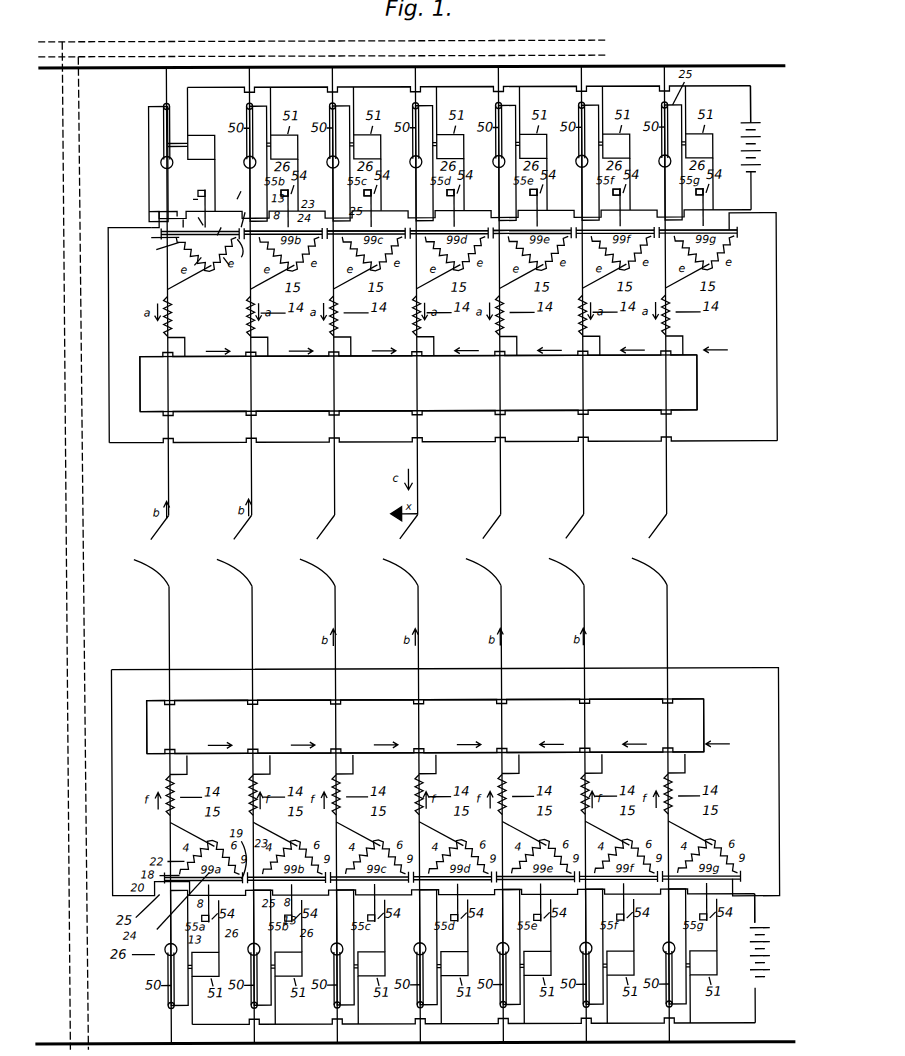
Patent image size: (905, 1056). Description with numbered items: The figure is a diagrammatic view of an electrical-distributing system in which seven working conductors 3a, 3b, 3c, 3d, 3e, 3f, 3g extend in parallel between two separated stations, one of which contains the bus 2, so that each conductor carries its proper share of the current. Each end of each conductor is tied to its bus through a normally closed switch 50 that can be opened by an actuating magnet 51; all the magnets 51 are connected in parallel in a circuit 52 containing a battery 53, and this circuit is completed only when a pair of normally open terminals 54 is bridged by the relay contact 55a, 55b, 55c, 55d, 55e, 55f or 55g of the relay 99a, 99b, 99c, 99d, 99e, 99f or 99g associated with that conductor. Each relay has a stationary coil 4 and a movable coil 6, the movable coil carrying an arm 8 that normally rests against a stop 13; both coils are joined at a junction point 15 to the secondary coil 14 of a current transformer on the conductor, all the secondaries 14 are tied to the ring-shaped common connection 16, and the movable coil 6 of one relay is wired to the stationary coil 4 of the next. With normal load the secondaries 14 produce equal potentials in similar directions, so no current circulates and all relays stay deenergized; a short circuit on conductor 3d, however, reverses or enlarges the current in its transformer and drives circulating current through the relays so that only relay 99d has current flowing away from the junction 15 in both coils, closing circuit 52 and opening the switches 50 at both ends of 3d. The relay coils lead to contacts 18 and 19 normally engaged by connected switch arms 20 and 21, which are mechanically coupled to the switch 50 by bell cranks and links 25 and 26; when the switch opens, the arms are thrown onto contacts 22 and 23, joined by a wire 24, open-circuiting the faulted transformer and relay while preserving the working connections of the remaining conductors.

The bus 2 is at (293, 68).
The working conductor 3a is at (145, 551).
The working conductor 3b is at (228, 550).
The working conductor 3c is at (311, 550).
The working conductor 3d is at (394, 550).
The working conductor 3e is at (477, 550).
The working conductor 3f is at (560, 549).
The working conductor 3g is at (643, 549).
The stationary coil 4 is at (193, 266).
The movable coil 6 is at (230, 266).
The arm 8 is at (196, 216).
The stop 13 is at (186, 198).
The secondary coil 14 is at (176, 314).
The junction point 15 is at (192, 280).
The common connection 16 is at (380, 357).
The contact 18 is at (158, 248).
The contact 19 is at (238, 248).
The switch arm 20 is at (178, 217).
The switch arm 21 is at (241, 188).
The contact 22 is at (156, 235).
The contact 23 is at (245, 211).
The wire 24 is at (221, 222).
The bell crank and link 25 is at (157, 222).
The bell crank and link 26 is at (148, 181).
The switch 50 is at (160, 131).
The actuating magnet 51 is at (204, 135).
The circuit 52 is at (715, 88).
The battery 53 is at (762, 156).
The terminals 54 is at (207, 195).
The relay contact 55a is at (193, 185).
The relay contact 55b is at (276, 185).
The relay contact 55c is at (359, 185).
The relay contact 55d is at (442, 185).
The relay contact 55e is at (525, 184).
The relay contact 55f is at (608, 184).
The relay contact 55g is at (691, 184).
The relay 99a is at (200, 249).
The relay 99b is at (283, 239).
The relay 99c is at (366, 239).
The relay 99d is at (449, 239).
The relay 99e is at (532, 238).
The relay 99f is at (615, 238).
The relay 99g is at (698, 238).